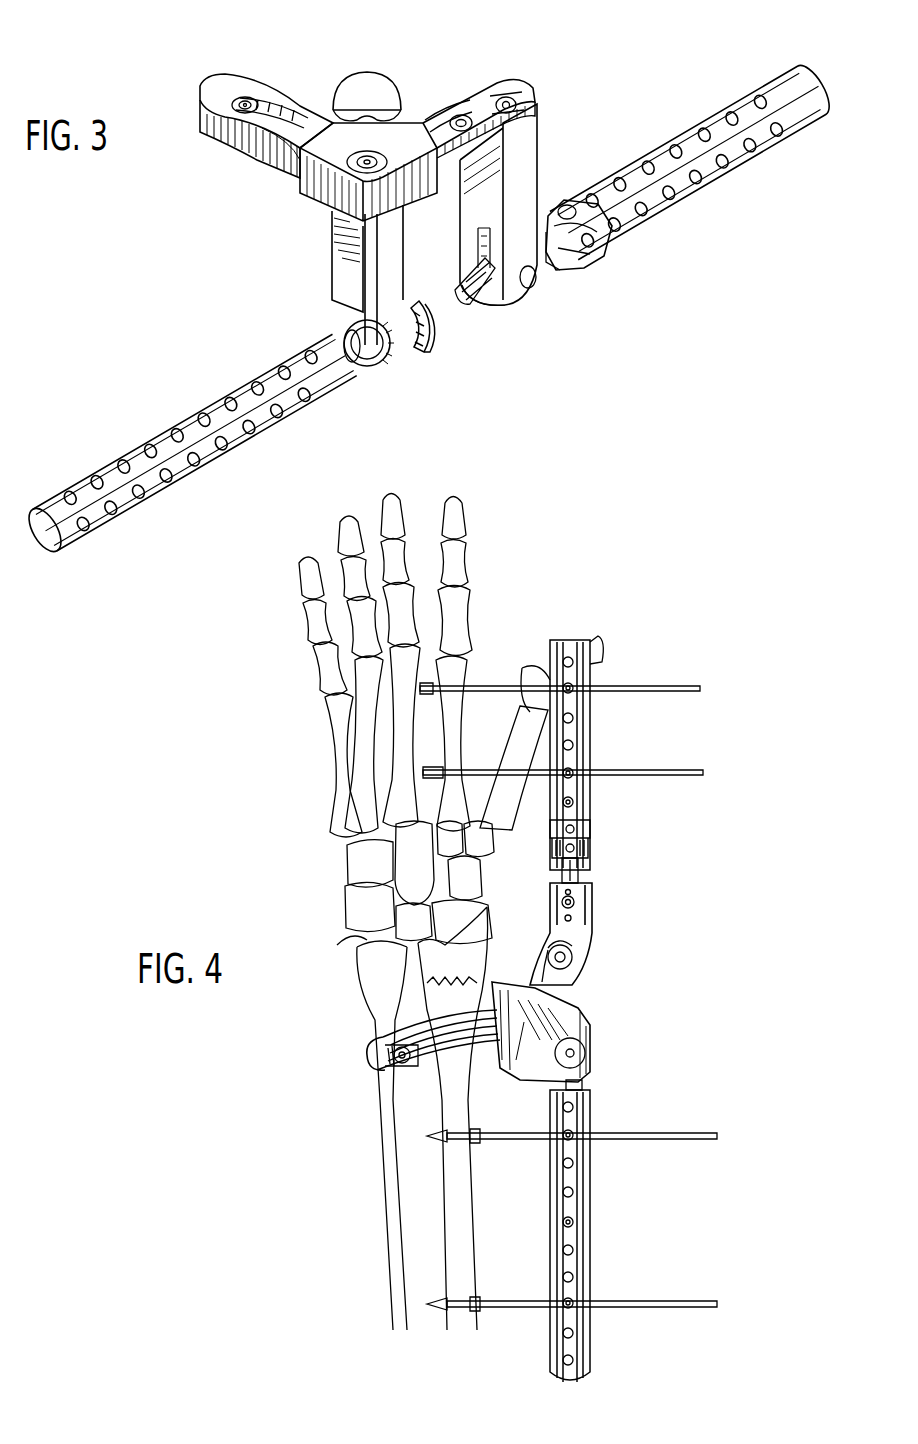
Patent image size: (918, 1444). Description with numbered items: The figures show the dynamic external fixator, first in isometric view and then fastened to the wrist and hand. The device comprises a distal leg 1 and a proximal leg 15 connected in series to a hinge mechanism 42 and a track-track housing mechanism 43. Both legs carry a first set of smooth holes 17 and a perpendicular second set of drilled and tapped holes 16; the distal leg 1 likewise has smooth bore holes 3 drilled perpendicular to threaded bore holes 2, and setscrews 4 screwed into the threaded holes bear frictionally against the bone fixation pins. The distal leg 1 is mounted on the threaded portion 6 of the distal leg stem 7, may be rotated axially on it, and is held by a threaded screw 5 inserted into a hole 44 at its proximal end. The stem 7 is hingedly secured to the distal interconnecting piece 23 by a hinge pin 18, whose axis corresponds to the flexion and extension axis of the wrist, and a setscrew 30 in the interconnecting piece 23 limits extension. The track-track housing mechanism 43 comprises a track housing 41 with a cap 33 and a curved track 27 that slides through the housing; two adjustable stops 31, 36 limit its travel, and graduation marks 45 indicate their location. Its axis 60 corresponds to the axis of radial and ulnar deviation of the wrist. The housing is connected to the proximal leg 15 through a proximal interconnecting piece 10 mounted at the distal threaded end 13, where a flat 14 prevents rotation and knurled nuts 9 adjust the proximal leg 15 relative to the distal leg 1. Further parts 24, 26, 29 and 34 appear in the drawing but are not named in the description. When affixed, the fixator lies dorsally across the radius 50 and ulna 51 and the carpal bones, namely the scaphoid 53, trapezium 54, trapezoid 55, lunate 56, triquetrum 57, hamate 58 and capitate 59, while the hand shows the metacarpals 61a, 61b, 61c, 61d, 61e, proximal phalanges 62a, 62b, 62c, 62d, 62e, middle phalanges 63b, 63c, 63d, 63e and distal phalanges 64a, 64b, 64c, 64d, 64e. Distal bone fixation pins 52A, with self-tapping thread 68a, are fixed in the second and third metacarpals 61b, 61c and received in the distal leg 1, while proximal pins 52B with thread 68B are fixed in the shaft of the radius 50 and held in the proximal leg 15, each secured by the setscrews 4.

In FIG. 3, the distal leg 1 is at (695, 165).
In FIG. 4, the distal leg 1 is at (591, 722).
In FIG. 3, the threaded bore holes 2 is at (678, 140).
In FIG. 4, the threaded bore holes 2 is at (574, 806).
In FIG. 3, the smooth bore holes 3 is at (782, 130).
In FIG. 4, the setscrews 4 is at (580, 770).
In FIG. 3, the threaded screw 5 is at (593, 239).
In FIG. 4, the threaded screw 5 is at (592, 840).
In FIG. 4, the threaded portion 6 is at (592, 858).
In FIG. 3, the distal leg stem 7 is at (554, 268).
In FIG. 4, the distal leg stem 7 is at (586, 878).
In FIG. 3, the knurled nuts 9 is at (415, 354).
In FIG. 3, the proximal interconnecting piece 10 is at (345, 276).
In FIG. 3, the distal threaded end 13 is at (343, 373).
In FIG. 4, the distal threaded end 13 is at (584, 1084).
In FIG. 3, the flat 14 is at (363, 372).
In FIG. 3, the proximal leg 15 is at (194, 445).
In FIG. 4, the proximal leg 15 is at (610, 1236).
In FIG. 3, the second set of holes 16 is at (157, 440).
In FIG. 4, the second set of holes 16 is at (578, 1222).
In FIG. 3, the first set of holes 17 is at (225, 455).
In FIG. 3, the hinge pin 18 is at (536, 290).
In FIG. 3, the distal interconnecting piece 23 is at (524, 300).
In FIG. 4, the distal interconnecting piece 23 is at (592, 908).
In FIG. 3, the arm 24 is at (538, 253).
In FIG. 3, the screw 26 is at (495, 92).
In FIG. 3, the curved track 27 is at (312, 116).
In FIG. 4, the curved track 27 is at (405, 1051).
In FIG. 3, the arm 29 is at (511, 106).
In FIG. 3, the setscrew 30 is at (488, 306).
In FIG. 3, the adjustable stop 31 is at (460, 114).
In FIG. 4, the adjustable stop 31 is at (572, 958).
In FIG. 3, the cap 33 is at (366, 88).
In FIG. 4, the cap 33 is at (572, 1036).
In FIG. 3, the pivot screw 34 is at (355, 166).
In FIG. 4, the pivot screw 34 is at (598, 1053).
In FIG. 3, the adjustable stop 36 is at (250, 92).
In FIG. 4, the adjustable stop 36 is at (392, 1062).
In FIG. 3, the track housing 41 is at (300, 172).
In FIG. 3, the hinge mechanism 42 is at (534, 318).
In FIG. 3, the track-track housing mechanism 43 is at (336, 124).
In FIG. 4, the track-track housing mechanism 43 is at (612, 1022).
In FIG. 3, the hole 44 is at (560, 210).
In FIG. 3, the graduation marks 45 is at (325, 100).
In FIG. 4, the radius 50 is at (462, 1270).
In FIG. 4, the ulna 51 is at (392, 1152).
In FIG. 4, the distal bone fixation pins 52A is at (660, 770).
In FIG. 4, the proximal bone fixation pins 52B is at (694, 1132).
In FIG. 4, the scaphoid 53 is at (484, 904).
In FIG. 4, the trapezium 54 is at (488, 846).
In FIG. 4, the trapezoid 55 is at (486, 884).
In FIG. 4, the lunate 56 is at (345, 944).
In FIG. 4, the triquetrum 57 is at (400, 924).
In FIG. 4, the hamate 58 is at (352, 850).
In FIG. 4, the capitate 59 is at (400, 858).
In FIG. 4, the axis of radial and ulnar deviation 60 is at (362, 900).
In FIG. 4, the metacarpal bone 61a is at (523, 728).
In FIG. 4, the second metacarpal bone 61b is at (456, 726).
In FIG. 4, the third metacarpal bone 61c is at (404, 790).
In FIG. 4, the metacarpal bone 61d is at (372, 768).
In FIG. 4, the metacarpal bone 61e is at (336, 738).
In FIG. 4, the proximal phalanx 62a is at (538, 706).
In FIG. 4, the proximal phalanx 62b is at (462, 620).
In FIG. 4, the proximal phalanx 62c is at (402, 620).
In FIG. 4, the proximal phalanx 62d is at (346, 632).
In FIG. 4, the proximal phalanx 62e is at (322, 676).
In FIG. 4, the middle phalanx 63b is at (462, 566).
In FIG. 4, the middle phalanx 63c is at (406, 570).
In FIG. 4, the middle phalanx 63d is at (352, 580).
In FIG. 4, the middle phalanx 63e is at (312, 628).
In FIG. 4, the distal phalanx 64a is at (600, 650).
In FIG. 4, the distal phalanx 64b is at (466, 520).
In FIG. 4, the distal phalanx 64c is at (386, 500).
In FIG. 4, the distal phalanx 64d is at (346, 522).
In FIG. 4, the distal phalanx 64e is at (302, 586).
In FIG. 4, the self-tapping thread 68a is at (466, 686).
In FIG. 4, the self-tapping thread 68B is at (438, 1300).